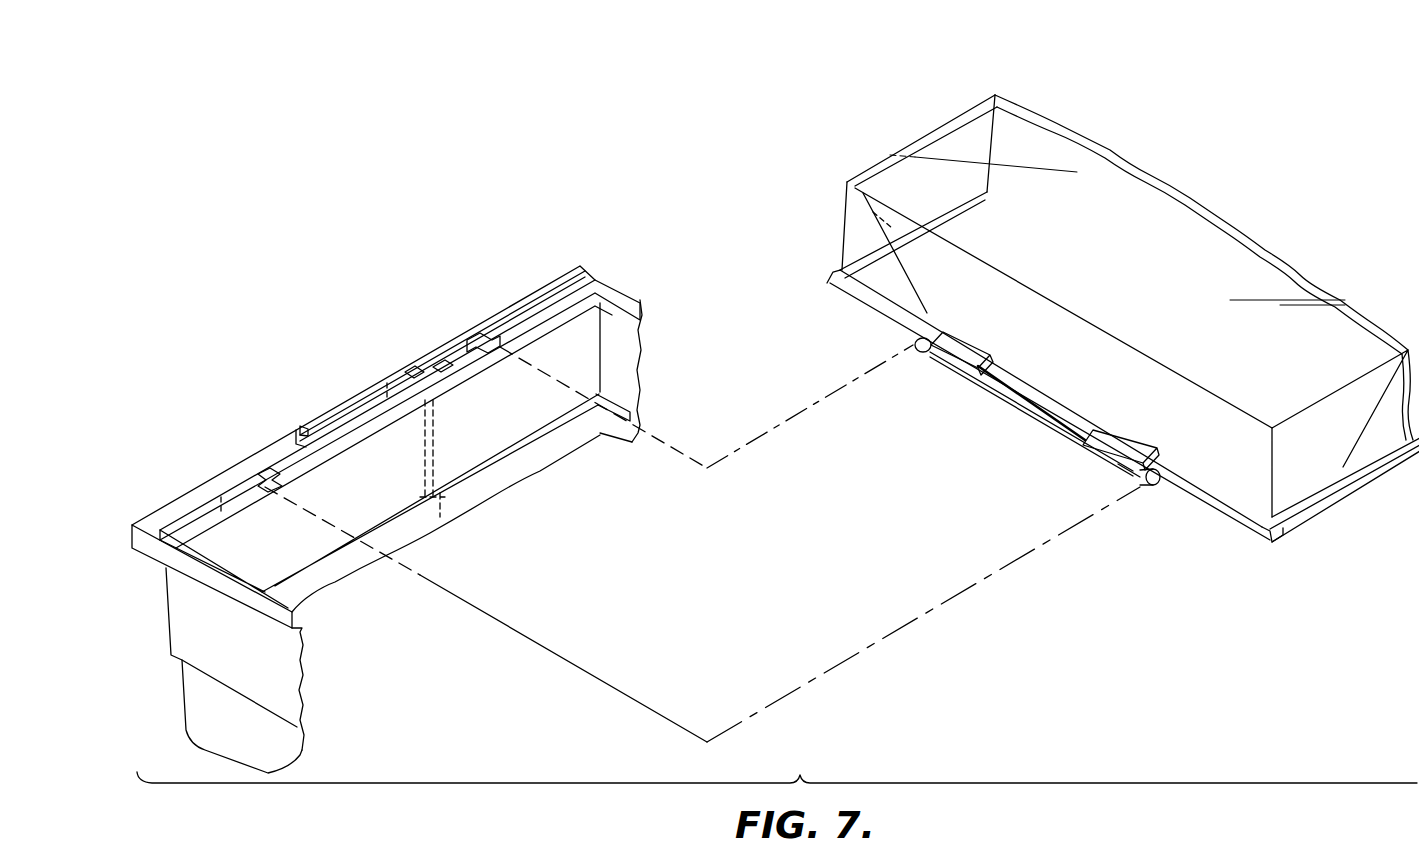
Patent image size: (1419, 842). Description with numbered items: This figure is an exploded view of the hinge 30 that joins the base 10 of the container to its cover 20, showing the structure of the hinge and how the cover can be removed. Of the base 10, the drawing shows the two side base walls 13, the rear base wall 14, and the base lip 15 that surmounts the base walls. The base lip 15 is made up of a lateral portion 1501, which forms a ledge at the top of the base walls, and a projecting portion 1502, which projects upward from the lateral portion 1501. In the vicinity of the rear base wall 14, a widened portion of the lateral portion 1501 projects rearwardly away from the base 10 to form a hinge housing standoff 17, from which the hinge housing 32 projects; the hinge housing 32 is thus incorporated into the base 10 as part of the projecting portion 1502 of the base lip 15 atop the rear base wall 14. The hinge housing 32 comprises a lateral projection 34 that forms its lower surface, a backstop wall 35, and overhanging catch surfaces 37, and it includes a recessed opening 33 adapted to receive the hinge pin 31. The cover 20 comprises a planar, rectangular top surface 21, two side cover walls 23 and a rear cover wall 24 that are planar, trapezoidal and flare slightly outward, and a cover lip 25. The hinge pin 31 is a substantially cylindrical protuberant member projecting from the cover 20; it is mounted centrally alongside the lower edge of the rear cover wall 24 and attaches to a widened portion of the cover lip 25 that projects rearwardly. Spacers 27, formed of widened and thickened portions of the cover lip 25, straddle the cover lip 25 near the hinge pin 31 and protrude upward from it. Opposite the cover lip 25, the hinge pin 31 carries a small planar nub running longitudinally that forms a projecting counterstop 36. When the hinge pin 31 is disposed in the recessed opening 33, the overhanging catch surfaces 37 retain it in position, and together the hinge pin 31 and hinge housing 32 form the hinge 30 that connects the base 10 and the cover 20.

The base 10 is at (180, 698).
The side base wall 13 is at (268, 684).
The rear base wall 14 is at (402, 504).
The base lip 15 is at (166, 512).
The lateral portion 1501 is at (527, 337).
The projecting portion 1502 is at (573, 270).
The hinge housing standoff 17 is at (433, 392).
The cover 20 is at (1285, 257).
The top surface 21 is at (1163, 306).
The side cover wall 23 is at (936, 201).
The rear cover wall 24 is at (1080, 369).
The cover lip 25 is at (1303, 517).
The spacers 27 is at (960, 352).
The hinge 30 is at (363, 370).
The hinge pin 31 is at (1140, 488).
The hinge housing 32 is at (305, 422).
The recessed opening 33 is at (337, 430).
The lateral projection 34 is at (440, 363).
The backstop wall 35 is at (423, 367).
The projecting counterstop 36 is at (1113, 467).
The overhanging catch surfaces 37 is at (265, 470).